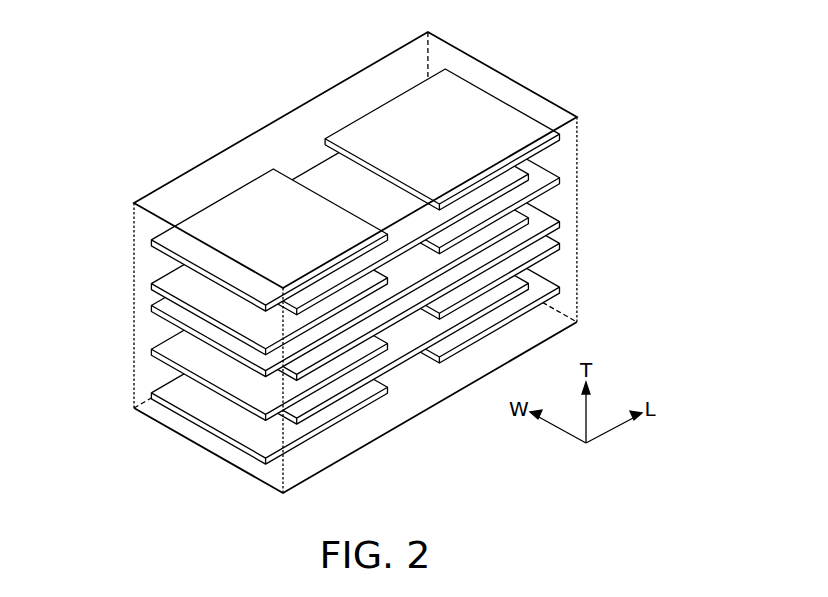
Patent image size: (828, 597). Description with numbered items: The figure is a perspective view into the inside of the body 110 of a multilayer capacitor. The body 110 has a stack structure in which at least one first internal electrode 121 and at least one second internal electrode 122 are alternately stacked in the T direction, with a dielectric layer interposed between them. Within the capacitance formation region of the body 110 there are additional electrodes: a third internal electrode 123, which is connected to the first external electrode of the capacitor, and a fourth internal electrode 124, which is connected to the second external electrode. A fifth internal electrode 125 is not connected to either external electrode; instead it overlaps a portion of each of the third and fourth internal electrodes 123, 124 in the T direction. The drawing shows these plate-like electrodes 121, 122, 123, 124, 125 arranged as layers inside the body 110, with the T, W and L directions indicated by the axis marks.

The body 110 is at (244, 138).
The first internal electrode 121 is at (540, 222).
The second internal electrode 122 is at (173, 311).
The third internal electrode 123 is at (418, 122).
The fourth internal electrode 124 is at (243, 222).
The fifth internal electrode 125 is at (340, 190).